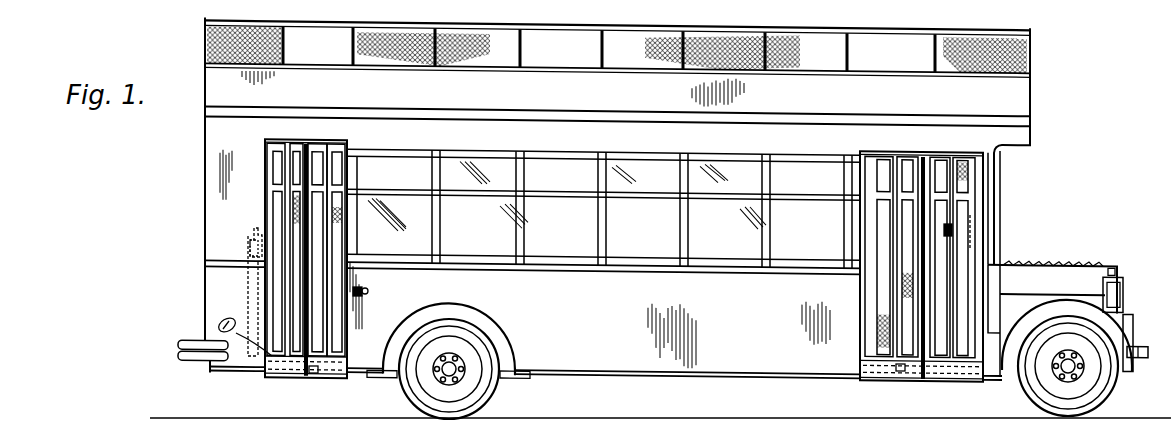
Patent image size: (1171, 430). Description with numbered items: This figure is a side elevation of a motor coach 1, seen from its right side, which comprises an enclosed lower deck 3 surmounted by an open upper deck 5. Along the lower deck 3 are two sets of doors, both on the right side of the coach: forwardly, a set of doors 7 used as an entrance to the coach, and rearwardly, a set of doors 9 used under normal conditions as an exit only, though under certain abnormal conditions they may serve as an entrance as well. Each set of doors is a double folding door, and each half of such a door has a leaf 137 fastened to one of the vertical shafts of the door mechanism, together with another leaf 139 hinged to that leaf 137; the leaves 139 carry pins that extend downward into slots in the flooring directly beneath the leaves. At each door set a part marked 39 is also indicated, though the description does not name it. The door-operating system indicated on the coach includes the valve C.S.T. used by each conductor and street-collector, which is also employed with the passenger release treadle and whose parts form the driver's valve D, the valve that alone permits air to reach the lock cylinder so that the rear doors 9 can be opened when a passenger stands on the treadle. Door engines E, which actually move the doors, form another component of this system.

The motor coach 1 is at (1004, 199).
The lower deck 3 is at (603, 263).
The upper deck 5 is at (617, 73).
The set of doors 7 is at (932, 336).
The set of doors 9 is at (272, 372).
The door operating handle 39 is at (258, 230).
The leaf 137 is at (275, 298).
The leaf 139 is at (306, 366).
The valve C.S.T. is at (250, 238).
The driver's valve D is at (968, 229).
The door engine E is at (313, 373).